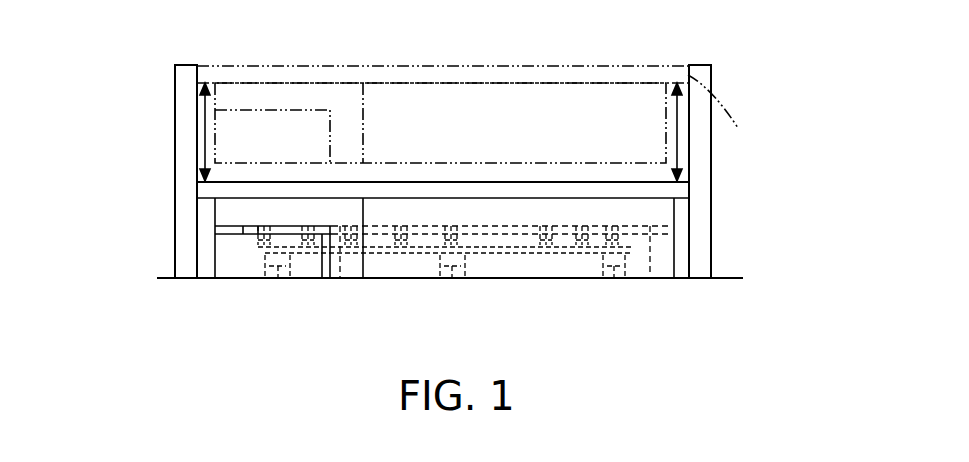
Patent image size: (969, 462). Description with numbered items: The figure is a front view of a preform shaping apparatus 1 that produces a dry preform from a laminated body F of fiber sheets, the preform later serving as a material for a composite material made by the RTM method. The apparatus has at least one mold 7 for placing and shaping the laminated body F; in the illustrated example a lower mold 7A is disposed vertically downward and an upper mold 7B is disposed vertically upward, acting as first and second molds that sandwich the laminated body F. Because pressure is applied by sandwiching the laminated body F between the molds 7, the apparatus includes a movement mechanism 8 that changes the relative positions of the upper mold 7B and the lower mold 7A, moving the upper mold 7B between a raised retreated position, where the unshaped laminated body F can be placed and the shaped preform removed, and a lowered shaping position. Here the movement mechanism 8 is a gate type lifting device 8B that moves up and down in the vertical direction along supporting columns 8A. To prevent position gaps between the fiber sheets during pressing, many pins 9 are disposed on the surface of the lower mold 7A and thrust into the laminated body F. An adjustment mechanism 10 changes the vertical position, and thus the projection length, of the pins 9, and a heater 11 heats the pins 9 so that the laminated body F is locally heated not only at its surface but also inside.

The preform shaping apparatus 1 is at (133, 131).
The mold 7 is at (382, 223).
The lower mold 7A is at (227, 258).
The upper mold 7B is at (227, 212).
The movement mechanism 8 is at (512, 171).
The supporting columns 8A is at (700, 223).
The gate type lifting device 8B is at (680, 186).
The pins 9 is at (548, 255).
The adjustment mechanism 10 is at (614, 272).
The heater 11 is at (416, 255).
The laminated body of fiber sheets F is at (249, 232).